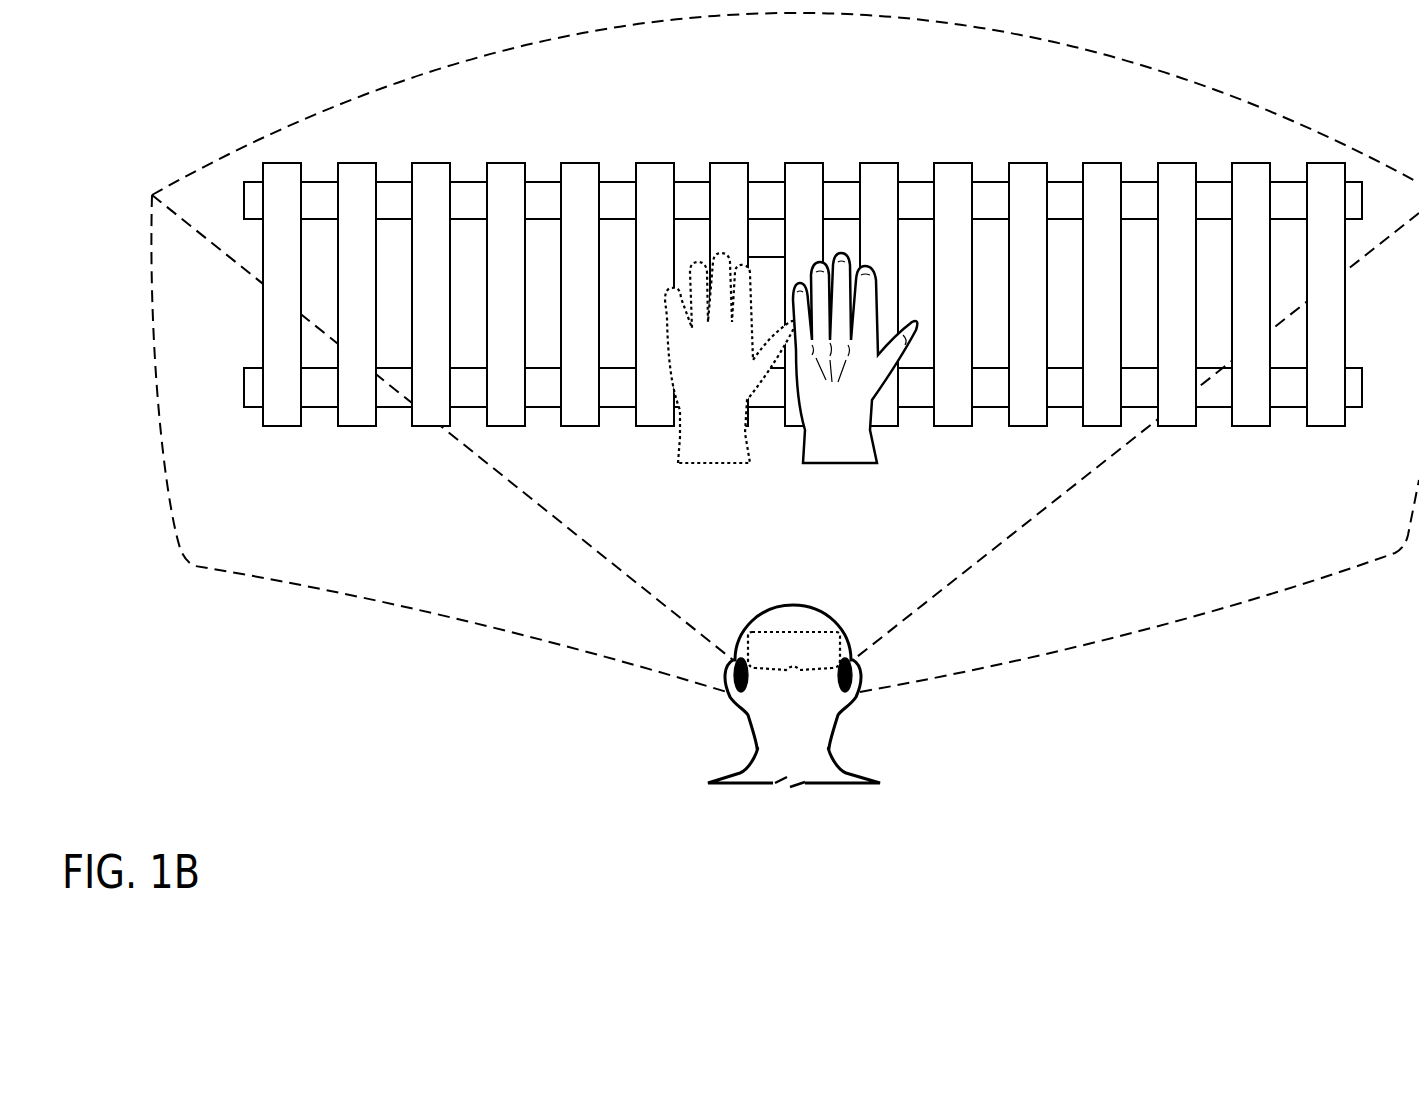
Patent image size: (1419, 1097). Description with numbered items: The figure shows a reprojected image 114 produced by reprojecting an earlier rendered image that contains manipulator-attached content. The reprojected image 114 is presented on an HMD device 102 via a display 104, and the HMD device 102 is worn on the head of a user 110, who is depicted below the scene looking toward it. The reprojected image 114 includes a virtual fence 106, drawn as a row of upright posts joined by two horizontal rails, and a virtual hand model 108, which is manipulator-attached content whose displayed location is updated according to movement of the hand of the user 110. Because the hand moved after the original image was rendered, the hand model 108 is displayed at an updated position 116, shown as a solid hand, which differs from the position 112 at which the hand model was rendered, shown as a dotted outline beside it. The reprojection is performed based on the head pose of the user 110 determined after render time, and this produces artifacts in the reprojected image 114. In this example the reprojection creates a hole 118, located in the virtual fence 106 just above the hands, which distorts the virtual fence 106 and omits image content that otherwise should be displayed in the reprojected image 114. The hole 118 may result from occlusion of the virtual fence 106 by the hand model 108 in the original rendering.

The HMD device 102 is at (837, 678).
The display 104 is at (811, 660).
The virtual fence 106 is at (1325, 448).
The virtual hand model 108 is at (833, 393).
The user 110 is at (850, 784).
The position 112 is at (720, 486).
The reprojected image 114 is at (783, 88).
The updated position 116 is at (821, 486).
The hole 118 is at (765, 245).